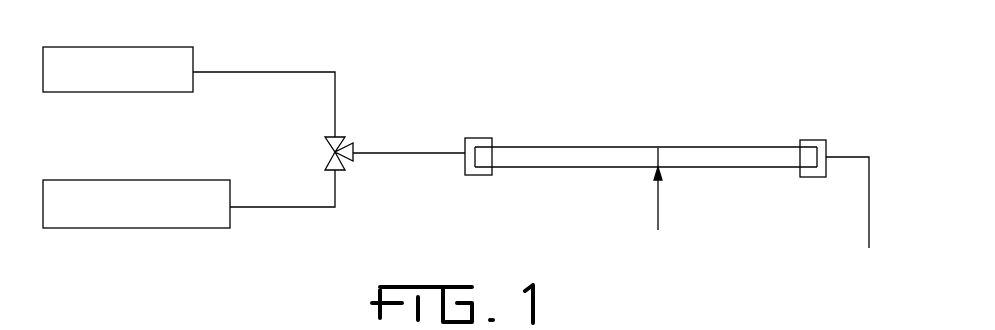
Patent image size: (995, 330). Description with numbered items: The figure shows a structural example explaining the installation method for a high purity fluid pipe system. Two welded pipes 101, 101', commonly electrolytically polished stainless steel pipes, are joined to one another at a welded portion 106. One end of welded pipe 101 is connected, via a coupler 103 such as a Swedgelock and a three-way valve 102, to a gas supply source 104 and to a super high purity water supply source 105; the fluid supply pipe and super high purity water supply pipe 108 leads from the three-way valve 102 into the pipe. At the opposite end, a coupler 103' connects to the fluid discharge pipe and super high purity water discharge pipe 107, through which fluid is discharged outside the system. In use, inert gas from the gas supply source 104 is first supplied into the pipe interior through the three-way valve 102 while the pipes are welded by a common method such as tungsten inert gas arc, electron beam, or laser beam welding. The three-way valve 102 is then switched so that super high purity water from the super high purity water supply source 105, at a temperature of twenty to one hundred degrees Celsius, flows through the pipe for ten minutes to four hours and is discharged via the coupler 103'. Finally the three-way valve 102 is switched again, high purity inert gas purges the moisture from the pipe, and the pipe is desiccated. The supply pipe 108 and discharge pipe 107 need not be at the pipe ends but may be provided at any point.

The welded pipe 101 is at (566, 125).
The welded pipe 101' is at (737, 123).
The 3-way valve 102 is at (340, 137).
The coupler 103 is at (490, 118).
The coupler 103' is at (835, 125).
The gas supply source 104 is at (160, 48).
The super high purity water supply source 105 is at (194, 180).
The welded portion 106 is at (664, 200).
The super high purity water discharge pipe 107 is at (869, 208).
The super high purity water supply pipe 108 is at (402, 153).